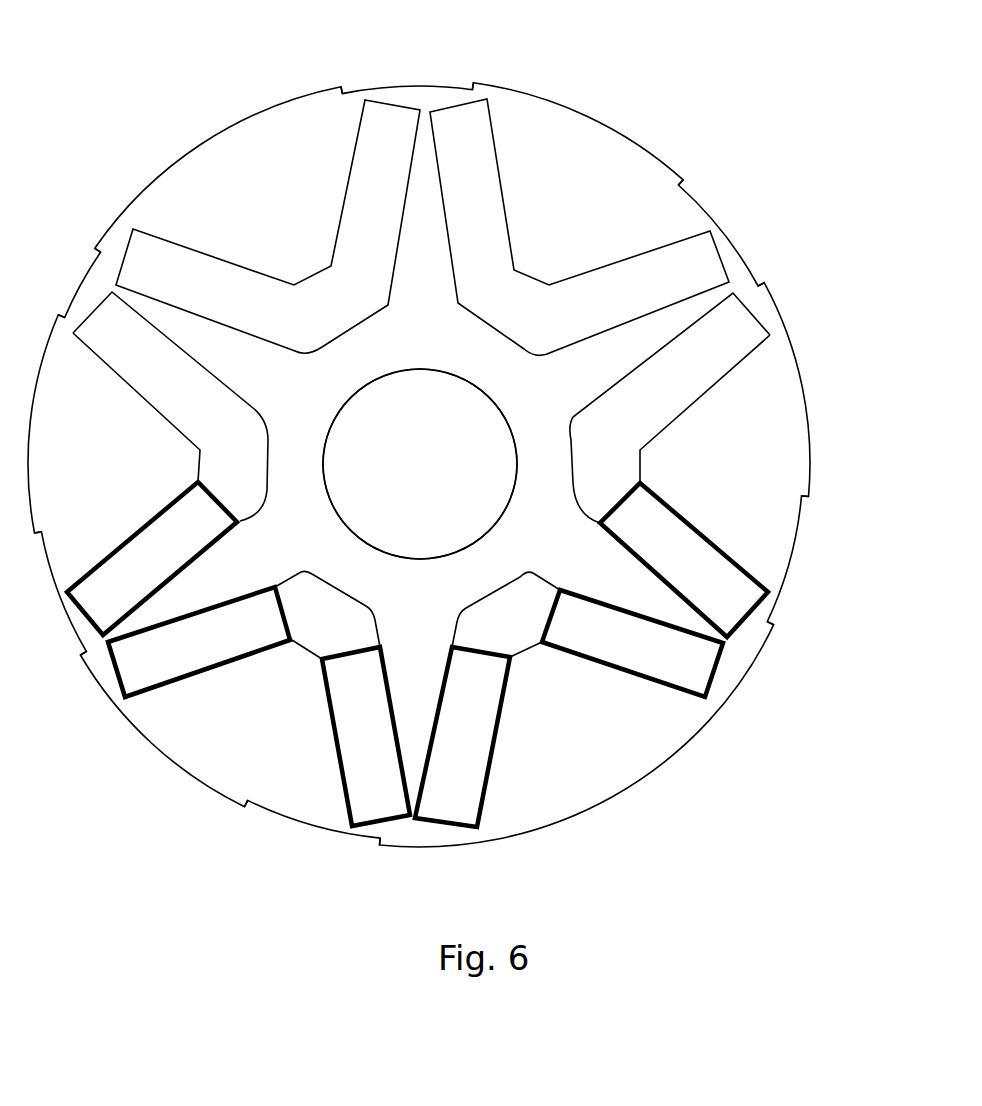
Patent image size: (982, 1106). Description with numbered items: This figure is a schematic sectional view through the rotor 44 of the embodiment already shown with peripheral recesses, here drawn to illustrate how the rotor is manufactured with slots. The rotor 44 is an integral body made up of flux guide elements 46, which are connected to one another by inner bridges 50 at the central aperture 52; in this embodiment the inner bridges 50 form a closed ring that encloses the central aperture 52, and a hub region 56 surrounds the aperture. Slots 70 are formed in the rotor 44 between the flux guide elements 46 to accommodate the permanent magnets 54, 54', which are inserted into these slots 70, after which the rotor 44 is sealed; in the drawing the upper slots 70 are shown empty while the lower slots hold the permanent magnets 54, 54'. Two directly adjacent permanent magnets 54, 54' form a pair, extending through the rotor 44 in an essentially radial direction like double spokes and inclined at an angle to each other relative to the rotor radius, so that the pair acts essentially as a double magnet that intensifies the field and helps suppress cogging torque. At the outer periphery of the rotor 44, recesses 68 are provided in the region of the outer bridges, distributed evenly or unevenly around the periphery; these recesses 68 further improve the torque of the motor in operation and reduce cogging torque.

The rotor 44 is at (190, 148).
The flux guide elements 46 is at (272, 185).
The inner bridges 50 is at (480, 362).
The central aperture 52 is at (448, 535).
The permanent magnet 54 is at (468, 685).
The permanent magnet 54' is at (460, 744).
The hub 56 is at (302, 392).
The recesses 68 is at (422, 88).
The slots 70 is at (382, 173).